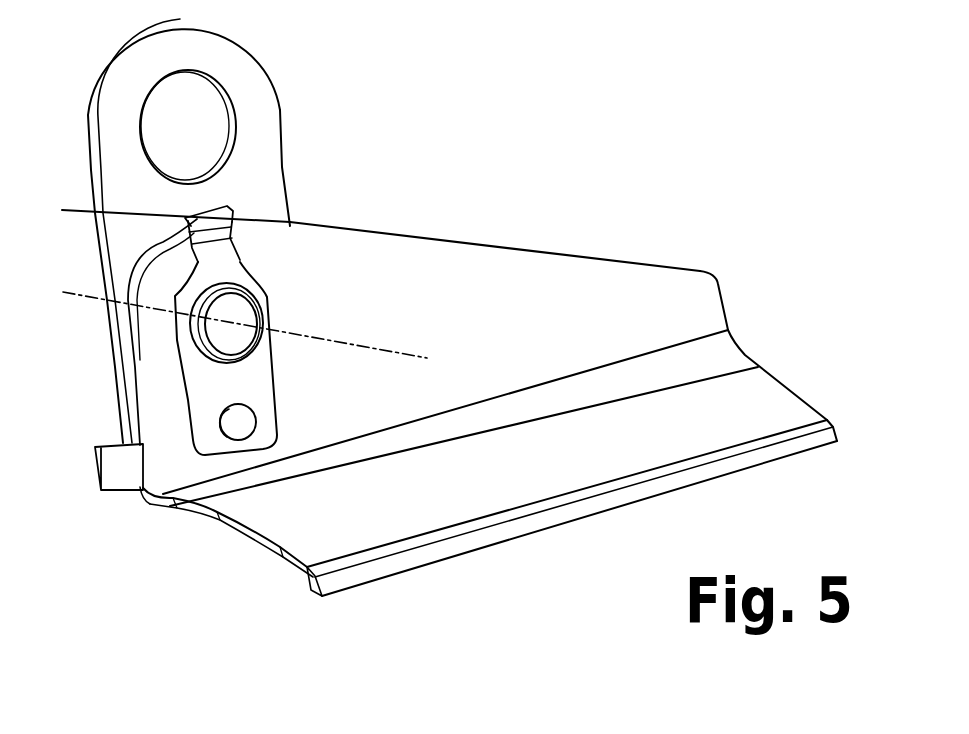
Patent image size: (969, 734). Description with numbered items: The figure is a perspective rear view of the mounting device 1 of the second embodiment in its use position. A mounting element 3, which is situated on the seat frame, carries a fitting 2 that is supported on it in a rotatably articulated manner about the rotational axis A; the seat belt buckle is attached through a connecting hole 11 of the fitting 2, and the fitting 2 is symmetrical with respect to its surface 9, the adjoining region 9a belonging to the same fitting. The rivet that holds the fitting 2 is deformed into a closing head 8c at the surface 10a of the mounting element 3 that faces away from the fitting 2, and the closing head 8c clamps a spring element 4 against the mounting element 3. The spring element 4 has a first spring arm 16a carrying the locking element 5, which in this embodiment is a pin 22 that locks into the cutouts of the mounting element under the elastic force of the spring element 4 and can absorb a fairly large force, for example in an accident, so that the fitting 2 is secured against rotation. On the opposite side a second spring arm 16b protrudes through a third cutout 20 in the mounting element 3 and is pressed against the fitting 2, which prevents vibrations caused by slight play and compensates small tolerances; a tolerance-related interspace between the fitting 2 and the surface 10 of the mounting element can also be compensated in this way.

The fastening arrangement 1 is at (422, 138).
The fitting 2 is at (260, 107).
The mounting element 3 is at (612, 283).
The spring element 4 is at (185, 338).
The locking element 5 is at (240, 430).
The closing head 8c is at (237, 313).
The surface 9 is at (288, 177).
The tab surface 9a is at (265, 157).
The surface 10 is at (368, 230).
The surface 10a is at (463, 260).
The connecting hole 11 is at (192, 88).
The first spring arm 16a is at (280, 402).
The second spring arm 16b is at (223, 255).
The third cutout 20 is at (163, 231).
The pin 22 is at (223, 413).
The rotational axis A is at (397, 352).